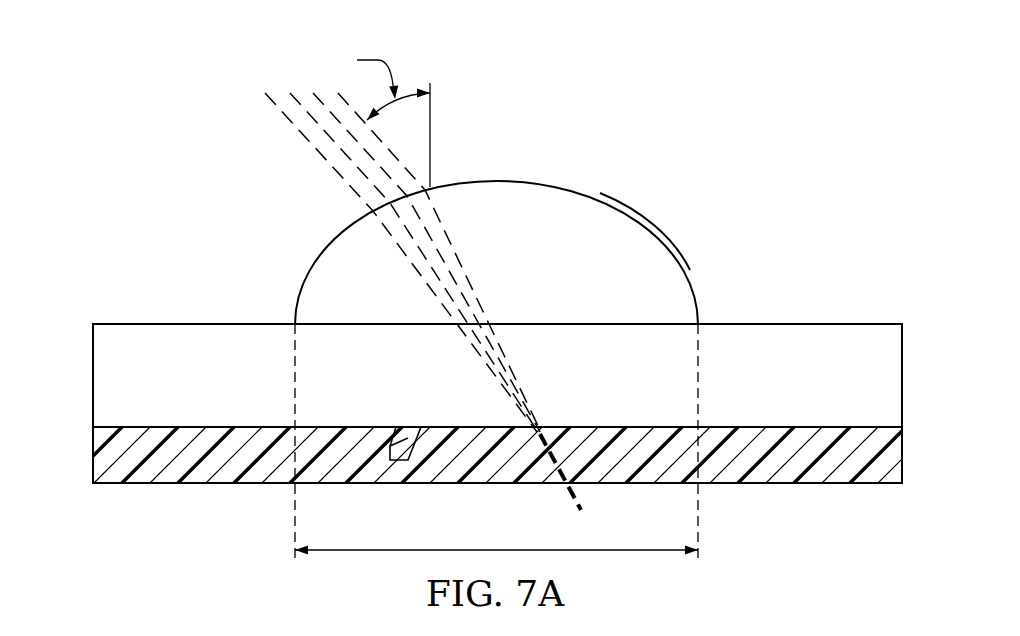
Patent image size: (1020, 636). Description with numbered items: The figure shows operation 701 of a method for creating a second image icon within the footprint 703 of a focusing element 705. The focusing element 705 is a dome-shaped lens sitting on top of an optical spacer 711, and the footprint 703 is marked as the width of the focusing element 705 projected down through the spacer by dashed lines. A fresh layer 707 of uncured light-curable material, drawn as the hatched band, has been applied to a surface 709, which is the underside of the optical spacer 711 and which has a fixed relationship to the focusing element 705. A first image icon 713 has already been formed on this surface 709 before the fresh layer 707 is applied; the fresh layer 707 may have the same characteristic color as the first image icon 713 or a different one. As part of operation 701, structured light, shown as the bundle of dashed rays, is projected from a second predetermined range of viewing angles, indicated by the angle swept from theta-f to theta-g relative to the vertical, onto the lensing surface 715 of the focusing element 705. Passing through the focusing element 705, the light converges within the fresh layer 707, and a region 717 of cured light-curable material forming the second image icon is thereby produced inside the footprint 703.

The operation 701 is at (592, 78).
The footprint 703 is at (497, 550).
The focusing element 705 is at (525, 180).
The fresh layer of uncured light curable material 707 is at (100, 463).
The surface 709 is at (222, 433).
The optical spacer 711 is at (100, 373).
The first image icon 713 is at (402, 432).
The lensing surface 715 is at (652, 241).
The region of cured light-curable material 717 is at (570, 457).